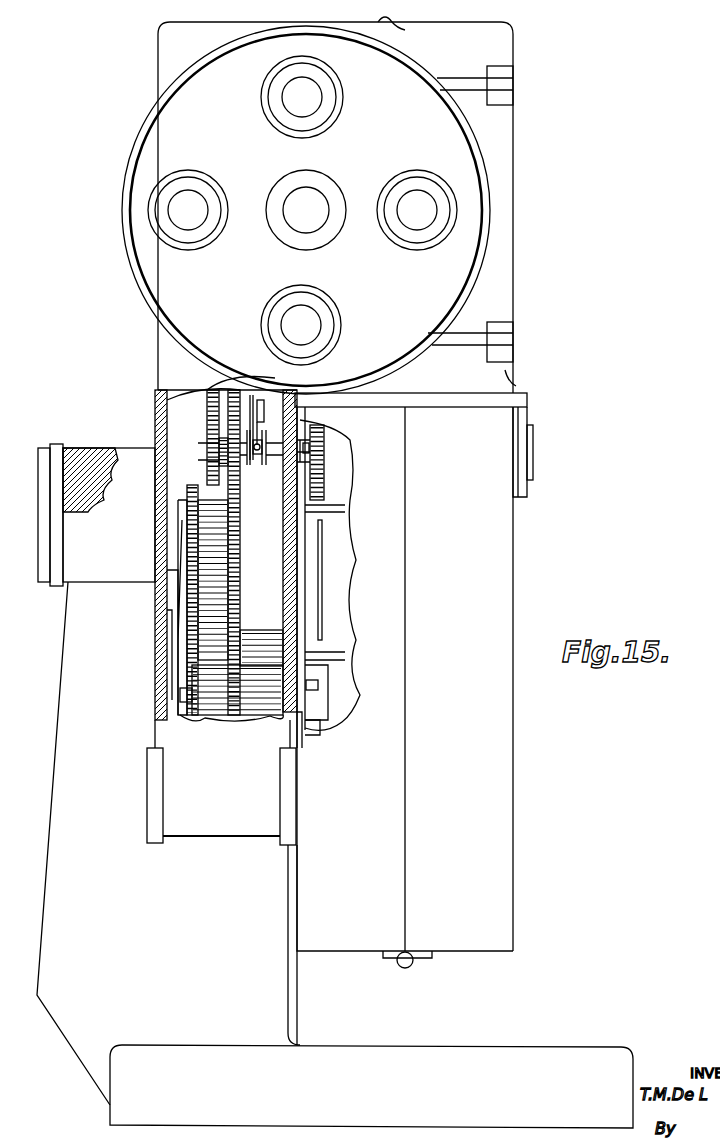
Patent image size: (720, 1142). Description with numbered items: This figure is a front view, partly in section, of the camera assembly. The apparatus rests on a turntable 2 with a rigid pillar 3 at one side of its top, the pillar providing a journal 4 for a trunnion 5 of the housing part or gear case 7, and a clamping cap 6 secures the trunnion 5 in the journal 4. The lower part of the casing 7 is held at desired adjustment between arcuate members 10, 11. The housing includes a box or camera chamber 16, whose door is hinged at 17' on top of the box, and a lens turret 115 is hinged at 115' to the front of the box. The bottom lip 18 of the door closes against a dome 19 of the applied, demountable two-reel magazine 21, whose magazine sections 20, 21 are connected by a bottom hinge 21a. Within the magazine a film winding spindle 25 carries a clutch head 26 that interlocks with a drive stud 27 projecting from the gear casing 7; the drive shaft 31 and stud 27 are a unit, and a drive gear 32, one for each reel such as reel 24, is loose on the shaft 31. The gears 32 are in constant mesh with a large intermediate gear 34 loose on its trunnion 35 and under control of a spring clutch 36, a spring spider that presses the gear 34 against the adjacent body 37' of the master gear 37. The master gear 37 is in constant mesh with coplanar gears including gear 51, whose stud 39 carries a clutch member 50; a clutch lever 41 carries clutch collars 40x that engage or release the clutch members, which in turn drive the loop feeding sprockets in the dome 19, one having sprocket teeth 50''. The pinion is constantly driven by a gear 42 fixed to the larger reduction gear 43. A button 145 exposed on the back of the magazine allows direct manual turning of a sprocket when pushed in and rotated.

The turntable 2 is at (600, 1052).
The pillar 3 is at (66, 642).
The journal 4 is at (76, 548).
The trunnion 5 is at (78, 498).
The clamping cap 6 is at (57, 520).
The gear case 7 is at (282, 547).
The arcuate member 10 is at (287, 838).
The arcuate member 11 is at (156, 840).
The camera chamber 16 is at (159, 342).
The hinge 17' is at (409, 29).
The bottom lip 18 is at (508, 388).
The dome 19 is at (528, 402).
The magazine section 20 is at (304, 616).
The magazine 21 is at (514, 527).
The bottom hinge 21a is at (405, 968).
The reel 24 is at (322, 592).
The film winding spindle 25 is at (328, 695).
The clutch head 26 is at (310, 730).
The drive stud 27 is at (290, 716).
The drive shaft 31 is at (210, 718).
The drive gear 32 is at (180, 695).
The intermediate gear 34 is at (192, 487).
The trunnion 35 is at (170, 655).
The spring clutch 36 is at (176, 616).
The master gear 37 is at (248, 552).
The gear body 37' is at (234, 580).
The stud 39 is at (221, 448).
The clutch collar 40x is at (264, 412).
The clutch lever 41 is at (250, 393).
The gear 42 is at (207, 392).
The reduction gear 43 is at (207, 410).
The clutch member 50 is at (292, 483).
The sprocket teeth 50'' is at (343, 462).
The gear 51 is at (170, 410).
The lens turret 115 is at (293, 210).
The turret hinge 115' is at (496, 336).
The button 145 is at (534, 466).